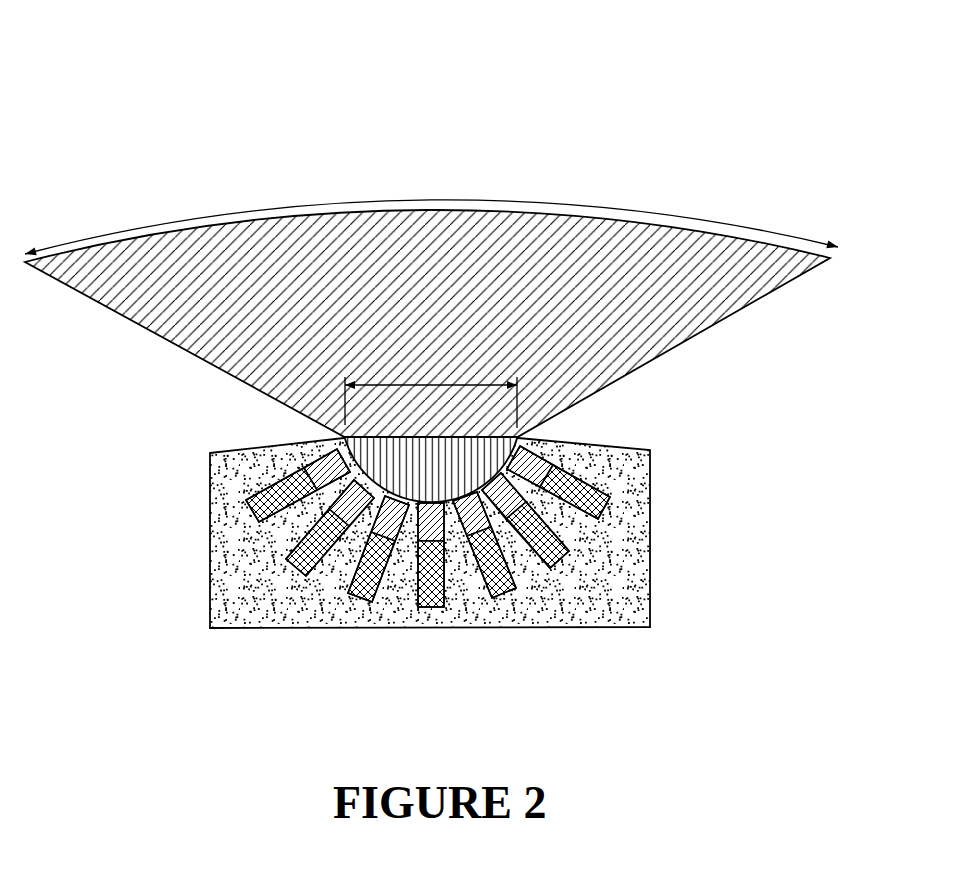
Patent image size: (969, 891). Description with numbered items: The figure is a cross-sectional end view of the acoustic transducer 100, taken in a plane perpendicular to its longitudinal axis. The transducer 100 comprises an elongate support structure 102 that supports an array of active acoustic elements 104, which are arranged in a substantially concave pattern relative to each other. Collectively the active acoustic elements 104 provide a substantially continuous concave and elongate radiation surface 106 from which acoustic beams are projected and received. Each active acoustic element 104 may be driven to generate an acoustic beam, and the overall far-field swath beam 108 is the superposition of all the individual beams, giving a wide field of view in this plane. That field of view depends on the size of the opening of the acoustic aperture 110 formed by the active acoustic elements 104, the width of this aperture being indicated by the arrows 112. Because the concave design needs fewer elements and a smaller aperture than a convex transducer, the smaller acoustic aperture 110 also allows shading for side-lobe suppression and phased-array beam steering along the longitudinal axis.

The acoustic transducer 100 is at (745, 100).
The elongate support structure 102 is at (591, 610).
The active acoustic elements 104 is at (413, 608).
The concave elongate radiation surface 106 is at (430, 488).
The far-field swath beam 108 is at (129, 335).
The acoustic aperture 110 is at (380, 453).
The arrows indicating aperture width 112 is at (257, 393).